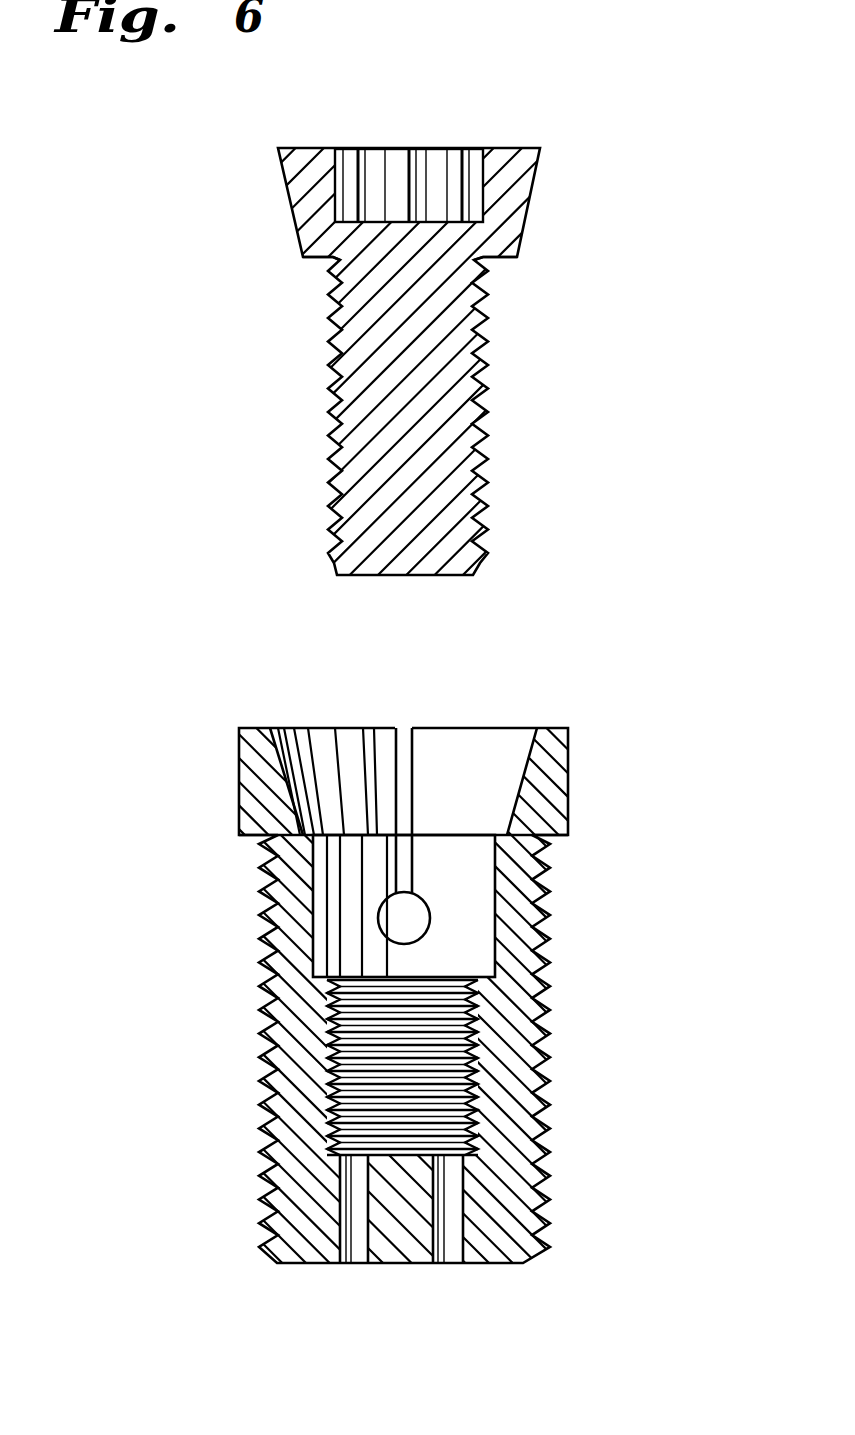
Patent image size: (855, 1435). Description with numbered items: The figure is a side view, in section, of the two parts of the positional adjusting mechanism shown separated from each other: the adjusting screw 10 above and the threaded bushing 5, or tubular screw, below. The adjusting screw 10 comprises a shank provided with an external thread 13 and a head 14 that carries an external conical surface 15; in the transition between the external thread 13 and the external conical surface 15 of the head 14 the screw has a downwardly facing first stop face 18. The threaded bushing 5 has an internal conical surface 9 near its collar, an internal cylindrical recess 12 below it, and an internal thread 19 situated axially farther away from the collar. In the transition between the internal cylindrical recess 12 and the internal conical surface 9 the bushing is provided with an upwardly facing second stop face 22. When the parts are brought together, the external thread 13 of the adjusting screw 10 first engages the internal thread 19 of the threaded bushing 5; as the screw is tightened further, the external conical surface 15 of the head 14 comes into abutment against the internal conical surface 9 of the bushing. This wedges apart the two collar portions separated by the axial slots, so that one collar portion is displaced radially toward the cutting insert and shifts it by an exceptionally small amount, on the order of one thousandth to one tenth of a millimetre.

The threaded bushing 5 is at (215, 1036).
The internal conical surface 9 is at (507, 833).
The adjusting screw 10 is at (535, 468).
The internal cylindrical recess 12 is at (312, 902).
The external thread 13 is at (455, 377).
The head 14 is at (508, 150).
The external conical surface 15 is at (285, 190).
The first stop face 18 is at (505, 258).
The internal thread 19 is at (330, 1062).
The second stop face 22 is at (532, 767).